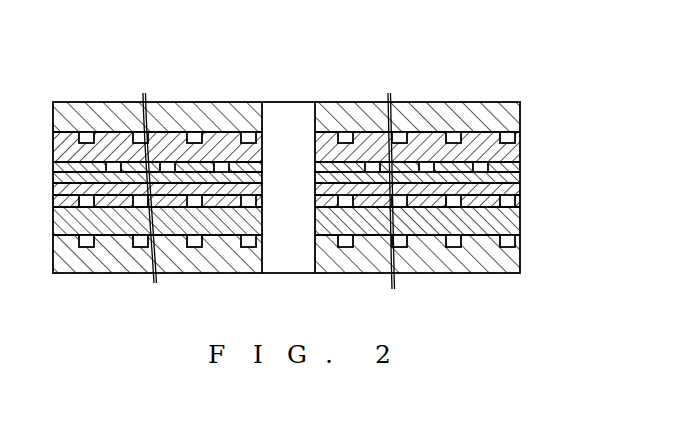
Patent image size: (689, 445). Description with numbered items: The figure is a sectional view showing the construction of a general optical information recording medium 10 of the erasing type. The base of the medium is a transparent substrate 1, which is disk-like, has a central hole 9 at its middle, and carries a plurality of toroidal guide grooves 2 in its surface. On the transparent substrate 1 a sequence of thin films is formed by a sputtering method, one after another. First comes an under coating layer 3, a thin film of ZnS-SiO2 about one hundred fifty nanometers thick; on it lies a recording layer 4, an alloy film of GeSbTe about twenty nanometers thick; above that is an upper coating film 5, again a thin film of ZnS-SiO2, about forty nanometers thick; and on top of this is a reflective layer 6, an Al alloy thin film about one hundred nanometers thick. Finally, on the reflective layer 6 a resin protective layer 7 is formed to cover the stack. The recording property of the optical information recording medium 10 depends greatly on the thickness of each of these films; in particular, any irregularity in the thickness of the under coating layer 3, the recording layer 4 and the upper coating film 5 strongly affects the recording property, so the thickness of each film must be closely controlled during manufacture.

The transparent substrate 1 is at (520, 266).
The toroidal guide grooves 2 is at (497, 243).
The under coating layer 3 is at (520, 226).
The recording layer 4 is at (520, 201).
The upper coating film 5 is at (520, 178).
The reflective layer 6 is at (520, 152).
The resin protective layer 7 is at (520, 122).
The central hole 9 is at (277, 125).
The optical information recording medium 10 is at (412, 97).